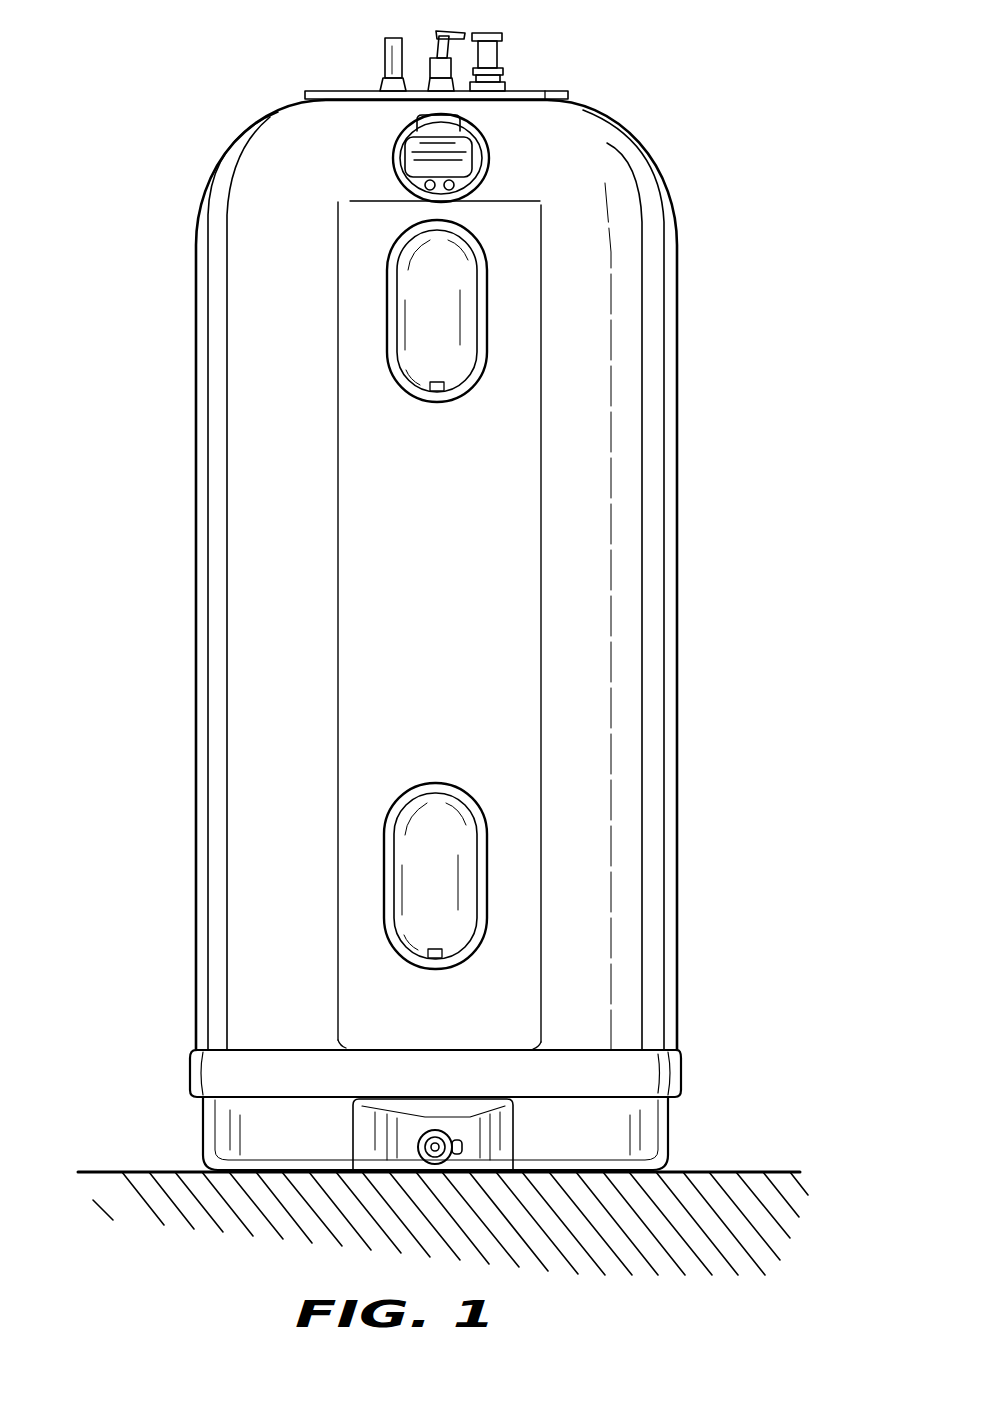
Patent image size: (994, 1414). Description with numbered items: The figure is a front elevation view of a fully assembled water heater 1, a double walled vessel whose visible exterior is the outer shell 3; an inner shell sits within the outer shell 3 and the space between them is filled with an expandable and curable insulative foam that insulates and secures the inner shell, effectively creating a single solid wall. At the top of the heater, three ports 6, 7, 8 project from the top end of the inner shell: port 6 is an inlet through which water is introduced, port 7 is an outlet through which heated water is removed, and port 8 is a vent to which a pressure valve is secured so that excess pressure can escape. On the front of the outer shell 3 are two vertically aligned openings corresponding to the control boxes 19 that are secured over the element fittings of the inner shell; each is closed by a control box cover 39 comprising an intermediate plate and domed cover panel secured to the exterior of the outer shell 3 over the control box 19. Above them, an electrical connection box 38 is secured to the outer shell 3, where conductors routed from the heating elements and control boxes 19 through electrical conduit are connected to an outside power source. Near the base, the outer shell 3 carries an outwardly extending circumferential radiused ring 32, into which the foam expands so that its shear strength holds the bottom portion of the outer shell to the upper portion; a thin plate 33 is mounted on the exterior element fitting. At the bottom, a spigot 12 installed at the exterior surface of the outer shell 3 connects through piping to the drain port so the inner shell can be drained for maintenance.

The water heater 1 is at (668, 150).
The outer shell 3 is at (445, 601).
The port 6 is at (383, 78).
The port 7 is at (504, 78).
The port 8 is at (427, 72).
The spigot 12 is at (440, 1132).
The control box 19 is at (594, 594).
The radiused ring 32 is at (685, 1072).
The plate 33 is at (195, 1062).
The electrical connection box 38 is at (393, 163).
The control box cover 39 is at (490, 315).